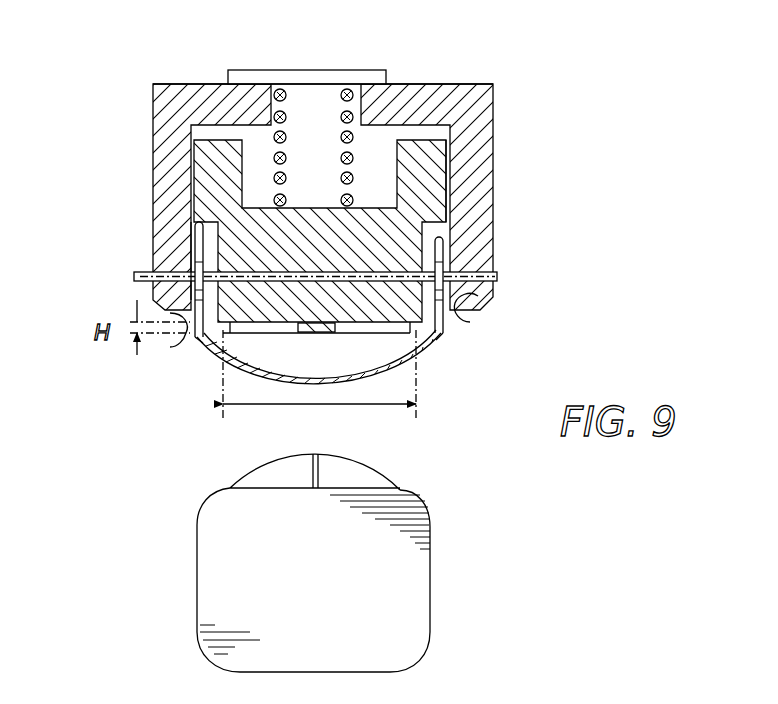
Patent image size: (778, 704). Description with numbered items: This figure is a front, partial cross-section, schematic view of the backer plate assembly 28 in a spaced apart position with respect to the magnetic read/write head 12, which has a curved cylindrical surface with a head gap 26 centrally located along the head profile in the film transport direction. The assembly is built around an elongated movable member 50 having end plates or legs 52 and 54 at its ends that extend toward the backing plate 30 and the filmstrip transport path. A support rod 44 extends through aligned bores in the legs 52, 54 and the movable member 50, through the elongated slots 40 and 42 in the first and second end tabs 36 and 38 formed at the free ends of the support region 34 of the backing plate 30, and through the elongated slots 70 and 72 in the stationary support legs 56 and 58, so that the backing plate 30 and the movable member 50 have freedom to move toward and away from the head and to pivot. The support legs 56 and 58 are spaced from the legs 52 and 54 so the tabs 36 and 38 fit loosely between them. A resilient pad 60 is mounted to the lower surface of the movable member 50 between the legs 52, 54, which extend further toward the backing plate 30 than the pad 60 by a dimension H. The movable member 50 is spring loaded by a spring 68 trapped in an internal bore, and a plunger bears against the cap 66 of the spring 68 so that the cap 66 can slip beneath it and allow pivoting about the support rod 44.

The magnetic read/write head 12 is at (313, 563).
The head gap 26 is at (310, 478).
The backer plate assembly 28 is at (175, 67).
The backing plate 30 is at (430, 383).
The support region 34 is at (323, 378).
The first end tab 36 is at (196, 224).
The second end tab 38 is at (452, 225).
The elongated slot 40 is at (173, 347).
The elongated slot 42 is at (470, 318).
The support rod 44 is at (500, 278).
The elongated movable member 50 is at (420, 150).
The end plate or leg 52 is at (223, 355).
The end plate or leg 54 is at (446, 338).
The stationary support leg 56 is at (153, 157).
The stationary support leg 58 is at (477, 145).
The resilient pad 60 is at (305, 333).
The cap 66 is at (240, 70).
The spring 68 is at (355, 83).
The elongated slot 70 is at (193, 253).
The elongated slot 72 is at (445, 250).